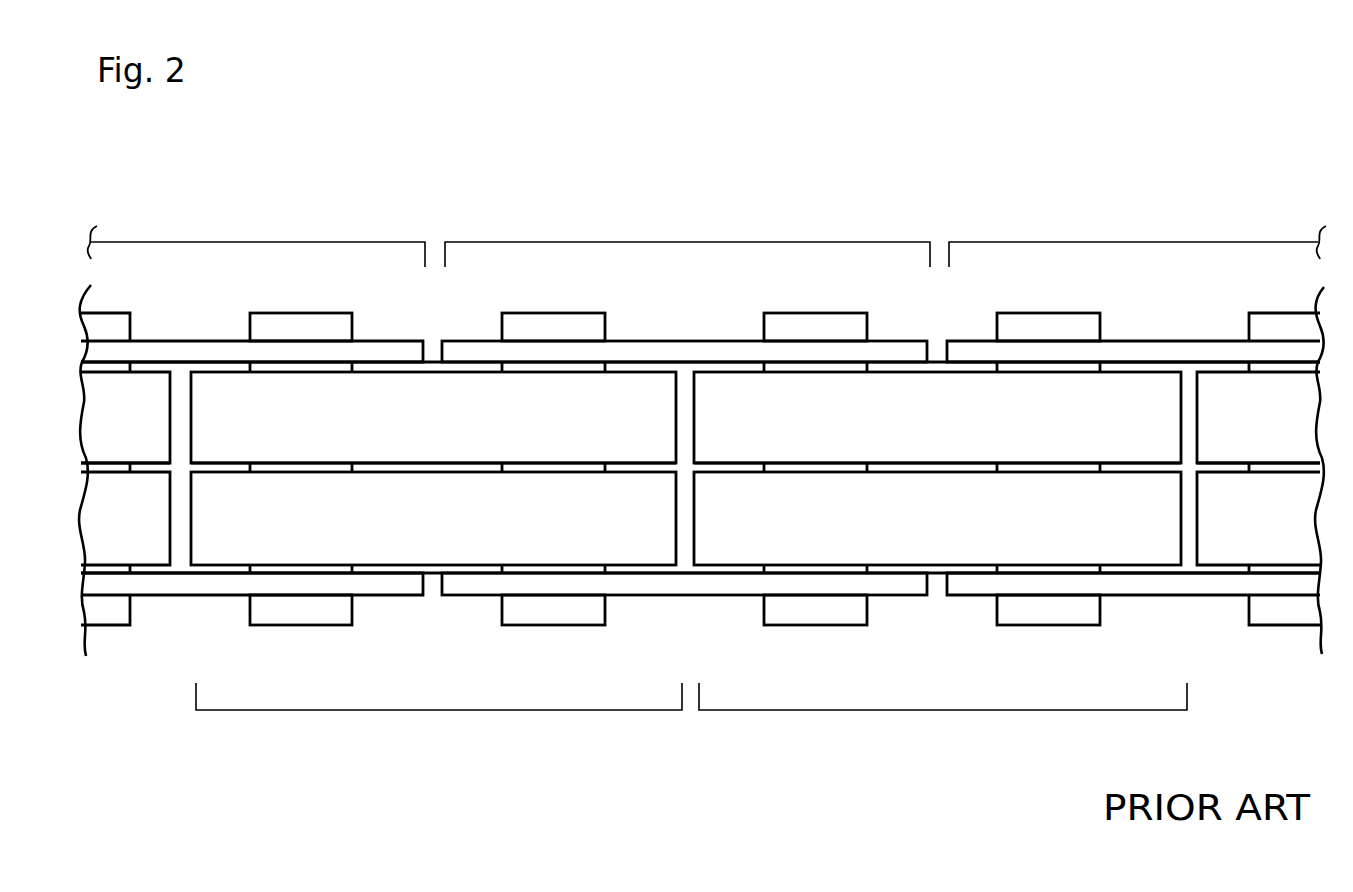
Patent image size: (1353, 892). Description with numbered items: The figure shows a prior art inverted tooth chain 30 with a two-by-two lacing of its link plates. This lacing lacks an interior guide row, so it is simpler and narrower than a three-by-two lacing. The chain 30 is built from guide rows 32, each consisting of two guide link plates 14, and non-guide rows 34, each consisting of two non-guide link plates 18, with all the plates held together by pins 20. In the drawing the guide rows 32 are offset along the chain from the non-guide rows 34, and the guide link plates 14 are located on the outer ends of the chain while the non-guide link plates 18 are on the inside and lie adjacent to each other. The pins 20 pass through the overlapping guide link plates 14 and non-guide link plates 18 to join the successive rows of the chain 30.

The guide link plate 14 is at (178, 352).
The non-guide link plate 18 is at (1282, 528).
The pin 20 is at (304, 325).
The chain 30 is at (1218, 130).
The guide row 32 is at (218, 240).
The non-guide row 34 is at (440, 713).